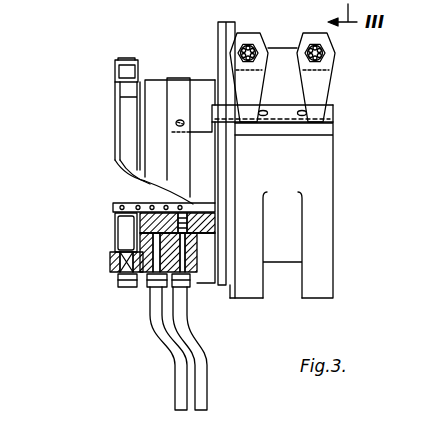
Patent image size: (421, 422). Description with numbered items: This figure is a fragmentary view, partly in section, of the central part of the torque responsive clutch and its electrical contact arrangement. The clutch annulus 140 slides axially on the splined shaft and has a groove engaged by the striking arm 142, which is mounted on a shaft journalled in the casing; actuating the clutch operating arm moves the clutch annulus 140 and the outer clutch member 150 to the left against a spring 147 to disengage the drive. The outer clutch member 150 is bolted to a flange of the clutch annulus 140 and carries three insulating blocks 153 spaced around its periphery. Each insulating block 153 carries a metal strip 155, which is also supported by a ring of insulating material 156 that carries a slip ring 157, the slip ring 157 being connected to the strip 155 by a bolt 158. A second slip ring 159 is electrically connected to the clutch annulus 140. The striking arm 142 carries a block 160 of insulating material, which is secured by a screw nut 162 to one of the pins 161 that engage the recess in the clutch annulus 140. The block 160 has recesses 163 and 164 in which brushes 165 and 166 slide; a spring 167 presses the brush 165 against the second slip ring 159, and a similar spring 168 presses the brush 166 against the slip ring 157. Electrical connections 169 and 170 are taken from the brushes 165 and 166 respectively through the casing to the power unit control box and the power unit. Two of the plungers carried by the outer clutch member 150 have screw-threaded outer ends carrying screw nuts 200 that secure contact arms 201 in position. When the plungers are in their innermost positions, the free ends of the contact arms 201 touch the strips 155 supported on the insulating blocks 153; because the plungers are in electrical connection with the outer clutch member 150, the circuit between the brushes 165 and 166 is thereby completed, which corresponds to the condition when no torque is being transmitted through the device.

The clutch annulus 140 is at (234, 27).
The striking arm 142 is at (127, 70).
The spring 147 is at (122, 203).
The outer clutch member 150 is at (324, 224).
The insulating block 153 is at (283, 52).
The metal strip 155 is at (308, 123).
The ring of insulating material 156 is at (211, 78).
The slip ring 157 is at (180, 79).
The bolt 158 is at (177, 123).
The second slip ring 159 is at (157, 79).
The block of insulating material 160 is at (117, 271).
The pin 161 is at (127, 218).
The screw nut 162 is at (120, 284).
The recess 163 is at (131, 287).
The recess 164 is at (192, 243).
The brush 165 is at (135, 203).
The brush 166 is at (203, 222).
The spring 167 is at (193, 213).
The spring 168 is at (190, 283).
The electrical connection 169 is at (177, 320).
The electrical connection 170 is at (206, 362).
The screw nut 200 is at (332, 53).
The contact arm 201 is at (317, 87).